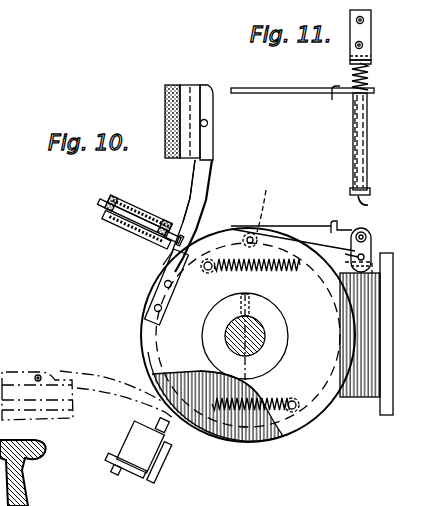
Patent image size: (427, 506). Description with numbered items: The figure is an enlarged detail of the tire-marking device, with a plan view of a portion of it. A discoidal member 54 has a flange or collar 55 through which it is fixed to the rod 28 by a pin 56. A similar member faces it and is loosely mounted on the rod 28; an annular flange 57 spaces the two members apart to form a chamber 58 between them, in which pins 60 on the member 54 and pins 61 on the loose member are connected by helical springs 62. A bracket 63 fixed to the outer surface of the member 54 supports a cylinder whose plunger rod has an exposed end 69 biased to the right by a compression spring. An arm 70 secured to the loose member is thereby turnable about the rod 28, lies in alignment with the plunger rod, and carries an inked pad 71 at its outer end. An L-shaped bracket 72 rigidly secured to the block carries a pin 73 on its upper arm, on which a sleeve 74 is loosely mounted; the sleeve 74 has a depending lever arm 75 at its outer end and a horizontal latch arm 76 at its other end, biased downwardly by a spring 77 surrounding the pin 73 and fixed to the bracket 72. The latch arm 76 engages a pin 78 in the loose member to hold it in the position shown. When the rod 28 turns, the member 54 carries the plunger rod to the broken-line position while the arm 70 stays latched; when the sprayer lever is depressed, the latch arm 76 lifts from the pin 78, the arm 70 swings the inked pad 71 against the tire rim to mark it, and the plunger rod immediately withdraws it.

In FIG. 10, the rod 28 is at (265, 333).
In FIG. 10, the discoidal member 54 is at (277, 418).
In FIG. 10, the flange or collar 55 is at (289, 350).
In FIG. 10, the pin 56 is at (256, 306).
In FIG. 10, the annular flange 57 is at (208, 432).
In FIG. 10, the chamber 58 is at (229, 425).
In FIG. 10, the pins 60 is at (207, 272).
In FIG. 10, the pins 61 is at (184, 434).
In FIG. 10, the helical springs 62 is at (238, 282).
In FIG. 10, the bracket 63 is at (163, 260).
In FIG. 10, the exposed end 69 is at (172, 232).
In FIG. 10, the arm 70 is at (209, 186).
In FIG. 10, the inked pad 71 is at (165, 102).
In FIG. 11, the bracket 72 is at (369, 46).
In FIG. 11, the pin 73 is at (354, 165).
In FIG. 11, the sleeve 74 is at (353, 132).
In FIG. 10, the lever arm 75 is at (355, 250).
In FIG. 11, the lever arm 75 is at (374, 207).
In FIG. 10, the latch arm 76 is at (309, 226).
In FIG. 11, the latch arm 76 is at (271, 89).
In FIG. 11, the spring 77 is at (368, 81).
In FIG. 10, the pin 78 is at (266, 202).